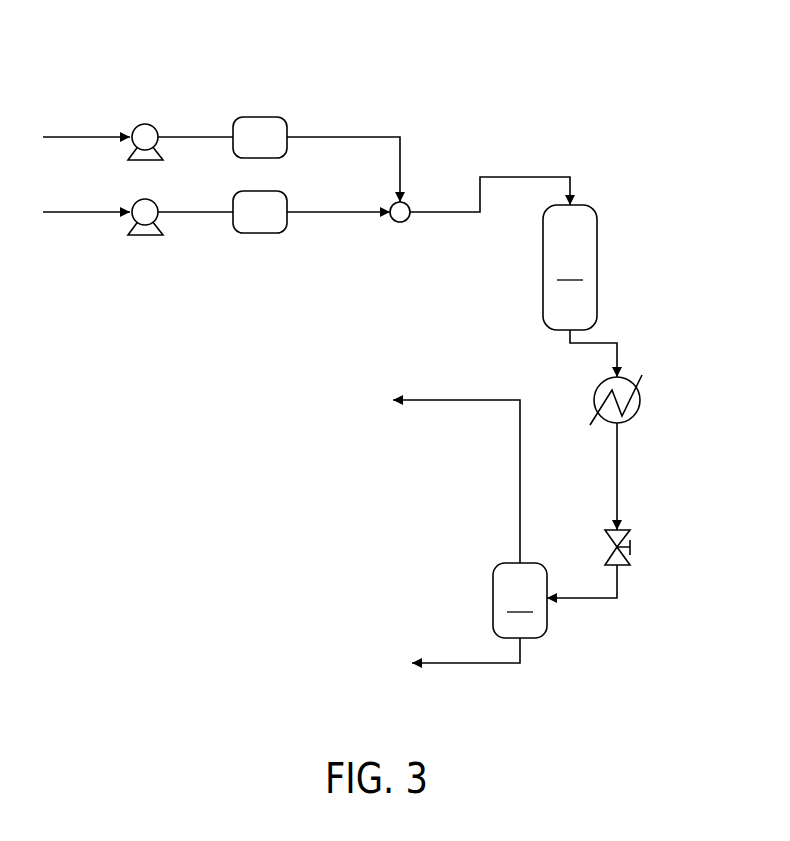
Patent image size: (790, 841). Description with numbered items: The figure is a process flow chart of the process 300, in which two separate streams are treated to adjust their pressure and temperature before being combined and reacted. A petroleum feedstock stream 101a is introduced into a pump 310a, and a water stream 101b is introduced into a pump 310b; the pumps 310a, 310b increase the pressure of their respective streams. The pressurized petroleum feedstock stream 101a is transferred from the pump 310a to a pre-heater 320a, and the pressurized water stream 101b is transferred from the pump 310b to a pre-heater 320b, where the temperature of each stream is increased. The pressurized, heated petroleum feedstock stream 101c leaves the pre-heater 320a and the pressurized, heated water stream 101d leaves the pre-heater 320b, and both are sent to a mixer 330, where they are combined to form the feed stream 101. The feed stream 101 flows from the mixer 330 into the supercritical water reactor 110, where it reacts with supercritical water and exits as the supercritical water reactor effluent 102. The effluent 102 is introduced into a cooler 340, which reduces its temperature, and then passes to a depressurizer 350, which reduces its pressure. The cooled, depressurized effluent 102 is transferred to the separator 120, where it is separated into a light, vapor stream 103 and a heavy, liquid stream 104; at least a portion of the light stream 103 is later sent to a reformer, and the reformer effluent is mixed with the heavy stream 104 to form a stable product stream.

The process 300 is at (607, 92).
The pump 310a is at (145, 236).
The pump 310b is at (145, 124).
The pre-heater 320a is at (258, 234).
The pre-heater 320b is at (260, 117).
The mixer 330 is at (408, 204).
The cooler 340 is at (595, 393).
The depressurizer 350 is at (632, 543).
The supercritical water reactor 110 is at (570, 267).
The separator 120 is at (520, 600).
The feed stream 101 is at (458, 214).
The petroleum feedstock stream 101a is at (202, 214).
The water stream 101b is at (195, 136).
The pressurized, heated petroleum feedstock stream 101c is at (358, 214).
The pressurized, heated water stream 101d is at (371, 137).
The supercritical water reactor effluent 102 is at (607, 342).
The light stream 103 is at (467, 398).
The heavy stream 104 is at (472, 665).